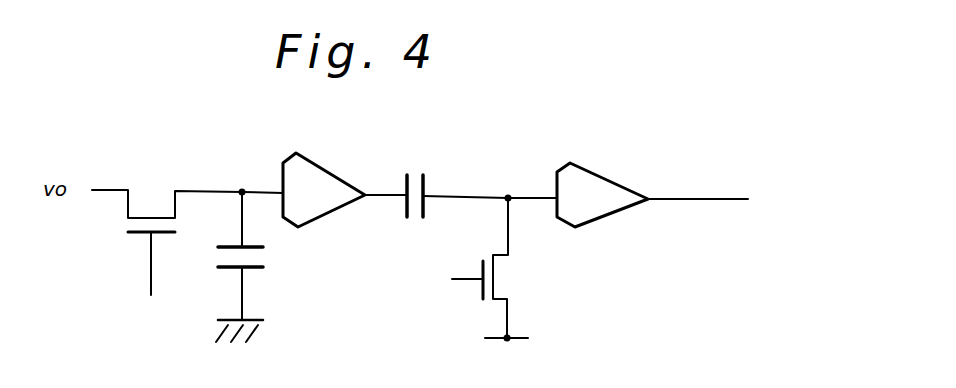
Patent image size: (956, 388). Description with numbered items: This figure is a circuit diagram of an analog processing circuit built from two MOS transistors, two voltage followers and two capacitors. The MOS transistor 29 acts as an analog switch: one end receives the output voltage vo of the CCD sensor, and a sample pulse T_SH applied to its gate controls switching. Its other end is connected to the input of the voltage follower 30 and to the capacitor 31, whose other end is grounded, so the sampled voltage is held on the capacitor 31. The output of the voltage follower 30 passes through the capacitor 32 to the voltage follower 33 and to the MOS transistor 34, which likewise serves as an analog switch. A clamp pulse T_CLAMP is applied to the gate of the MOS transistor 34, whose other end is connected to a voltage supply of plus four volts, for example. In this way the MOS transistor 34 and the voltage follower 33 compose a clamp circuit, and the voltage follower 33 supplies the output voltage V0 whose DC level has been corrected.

The MOS transistor 29 is at (157, 198).
The voltage follower 30 is at (328, 168).
The capacitor 31 is at (265, 257).
The capacitor 32 is at (422, 172).
The voltage follower 33 is at (617, 182).
The MOS transistor 34 is at (503, 281).